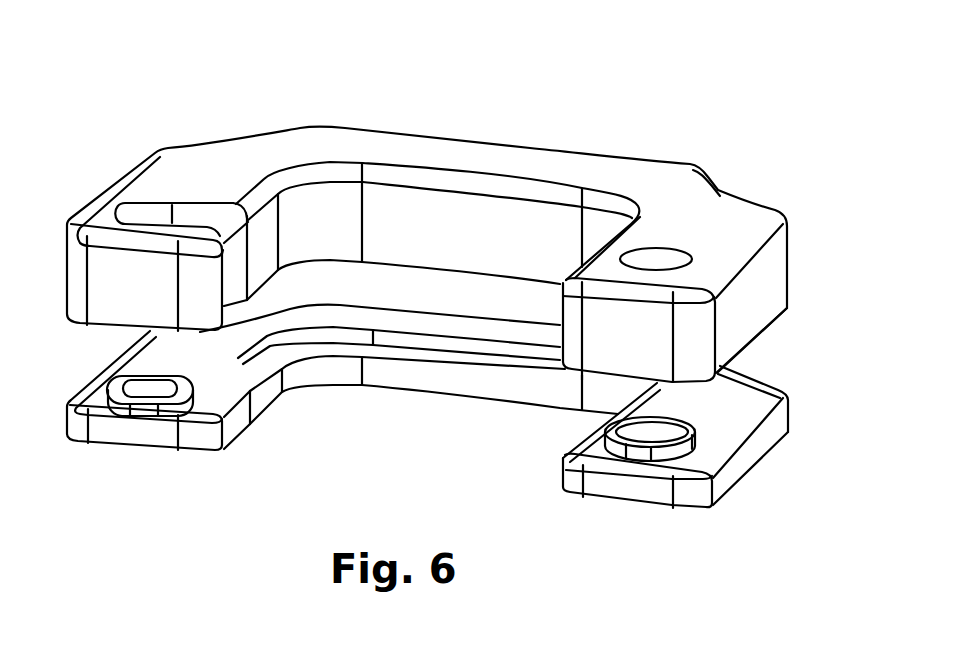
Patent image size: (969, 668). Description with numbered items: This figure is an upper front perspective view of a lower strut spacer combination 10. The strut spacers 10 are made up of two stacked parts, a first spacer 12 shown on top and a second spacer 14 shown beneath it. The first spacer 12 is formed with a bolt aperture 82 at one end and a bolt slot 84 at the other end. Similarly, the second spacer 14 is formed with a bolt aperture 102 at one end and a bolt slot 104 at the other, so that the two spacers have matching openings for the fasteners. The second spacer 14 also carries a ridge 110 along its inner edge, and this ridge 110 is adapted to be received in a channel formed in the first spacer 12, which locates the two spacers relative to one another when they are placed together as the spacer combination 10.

The lower strut spacer combination 10 is at (680, 109).
The first spacer 12 is at (733, 212).
The second spacer 14 is at (782, 420).
The bolt aperture 82 is at (677, 257).
The bolt slot 84 is at (153, 210).
The bolt aperture 102 is at (630, 430).
The bolt slot 104 is at (153, 382).
The ridge 110 is at (205, 358).